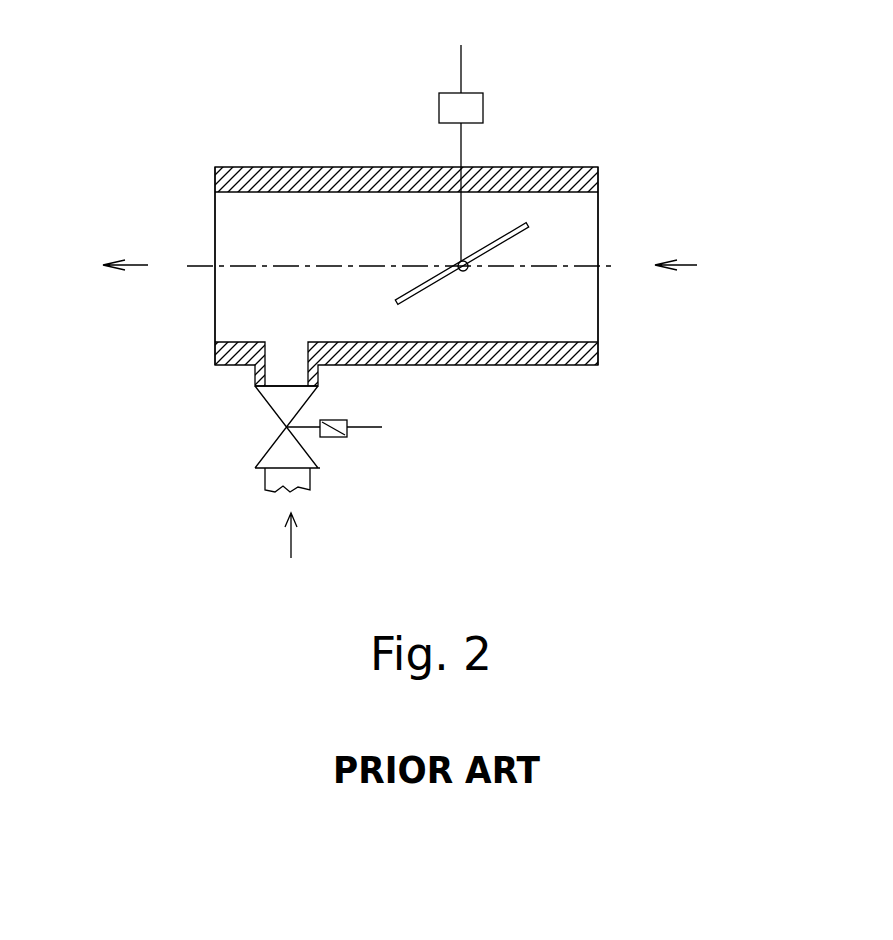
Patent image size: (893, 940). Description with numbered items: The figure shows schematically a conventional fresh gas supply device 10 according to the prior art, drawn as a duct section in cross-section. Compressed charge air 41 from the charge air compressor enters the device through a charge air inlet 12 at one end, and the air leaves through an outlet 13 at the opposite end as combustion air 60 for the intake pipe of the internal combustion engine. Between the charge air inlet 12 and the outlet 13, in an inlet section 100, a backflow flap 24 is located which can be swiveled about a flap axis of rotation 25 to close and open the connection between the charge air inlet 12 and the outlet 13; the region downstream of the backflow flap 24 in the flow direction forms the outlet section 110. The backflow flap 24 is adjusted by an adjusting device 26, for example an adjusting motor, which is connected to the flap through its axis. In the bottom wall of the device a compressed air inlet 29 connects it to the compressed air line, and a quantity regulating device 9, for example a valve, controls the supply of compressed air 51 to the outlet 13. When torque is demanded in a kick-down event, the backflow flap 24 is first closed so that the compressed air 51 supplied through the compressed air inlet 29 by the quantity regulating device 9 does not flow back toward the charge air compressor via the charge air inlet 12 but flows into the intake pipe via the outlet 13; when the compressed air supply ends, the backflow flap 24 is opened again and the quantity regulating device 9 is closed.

The fresh gas supply device 10 is at (370, 167).
The charge air inlet 12 is at (598, 210).
The outlet 13 is at (213, 210).
The combustion air 60 is at (132, 265).
The charge air 41 is at (677, 265).
The outlet section 110 is at (260, 293).
The inlet section 100 is at (527, 300).
The backflow flap 24 is at (418, 293).
The flap axis of rotation 25 is at (466, 272).
The adjusting device 26 is at (470, 107).
The compressed air inlet 29 is at (280, 390).
The quantity regulating device 9 is at (257, 467).
The compressed air 51 is at (285, 537).